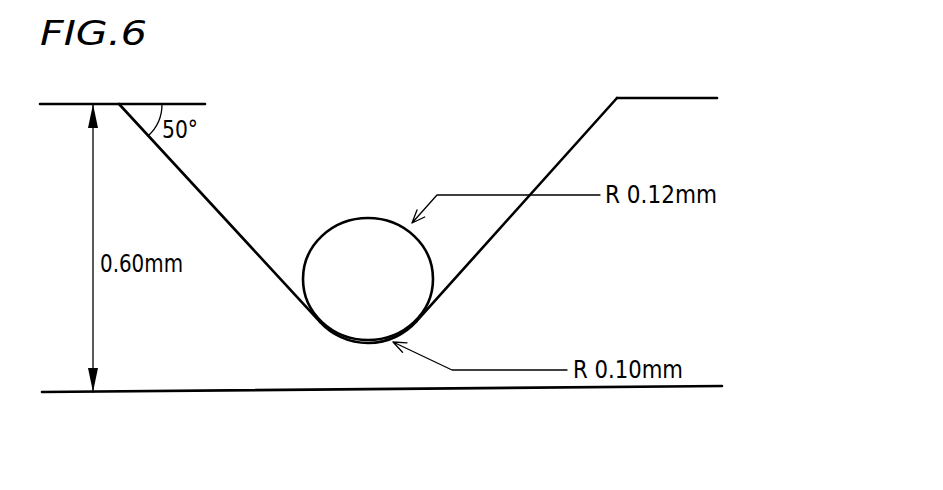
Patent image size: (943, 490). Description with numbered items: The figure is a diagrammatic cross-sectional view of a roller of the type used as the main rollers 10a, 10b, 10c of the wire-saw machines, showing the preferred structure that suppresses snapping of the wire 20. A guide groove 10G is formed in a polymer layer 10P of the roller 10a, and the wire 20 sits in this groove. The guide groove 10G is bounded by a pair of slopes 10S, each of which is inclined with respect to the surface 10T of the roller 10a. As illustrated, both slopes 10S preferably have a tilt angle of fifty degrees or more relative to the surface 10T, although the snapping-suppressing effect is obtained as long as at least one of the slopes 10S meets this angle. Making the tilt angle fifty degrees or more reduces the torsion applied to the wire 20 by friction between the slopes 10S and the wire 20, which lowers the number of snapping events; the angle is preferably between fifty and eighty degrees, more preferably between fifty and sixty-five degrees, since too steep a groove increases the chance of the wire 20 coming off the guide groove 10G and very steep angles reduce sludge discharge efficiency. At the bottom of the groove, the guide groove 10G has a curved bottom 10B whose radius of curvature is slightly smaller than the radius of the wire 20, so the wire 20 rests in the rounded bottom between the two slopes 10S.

The main roller 10a is at (684, 68).
The main roller 10b is at (445, 240).
The main roller 10c is at (445, 240).
The surface of the roller 10T is at (68, 103).
The polymer layer 10P is at (650, 128).
The guide groove 10G is at (447, 79).
The slopes 10S is at (550, 173).
The curved bottom 10B is at (358, 343).
The wire 20 is at (358, 240).